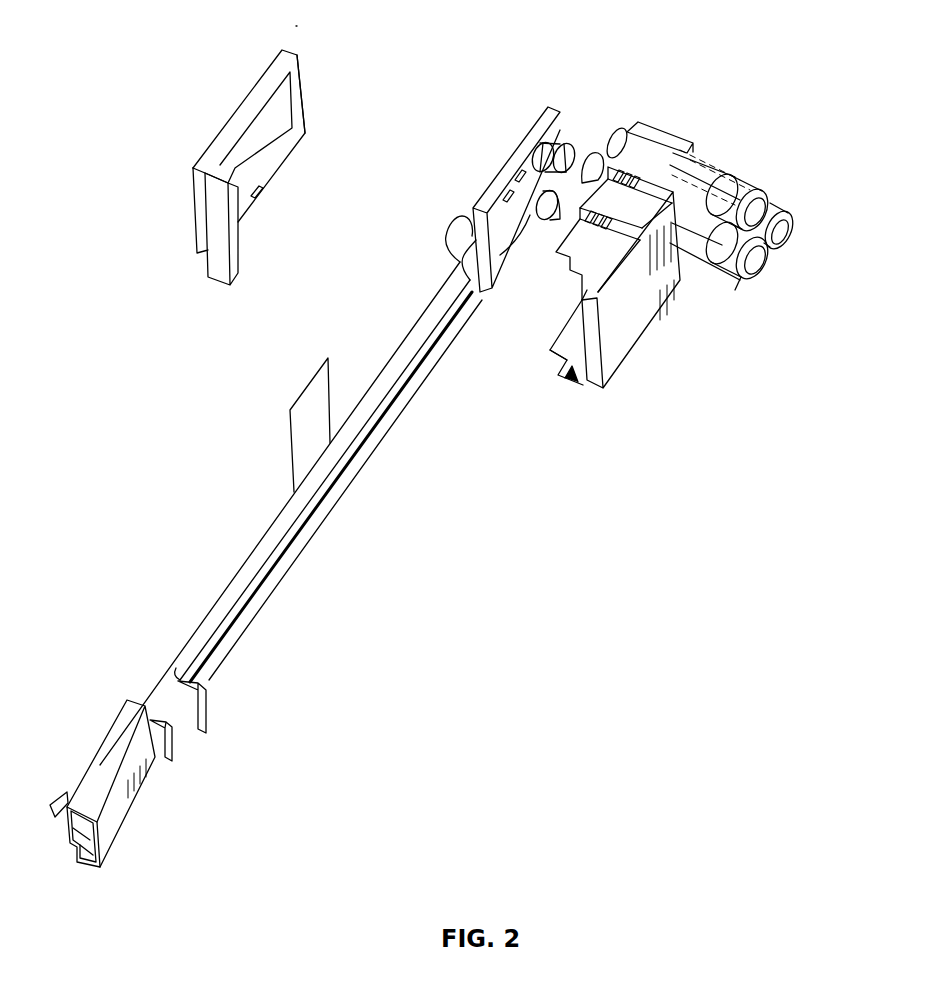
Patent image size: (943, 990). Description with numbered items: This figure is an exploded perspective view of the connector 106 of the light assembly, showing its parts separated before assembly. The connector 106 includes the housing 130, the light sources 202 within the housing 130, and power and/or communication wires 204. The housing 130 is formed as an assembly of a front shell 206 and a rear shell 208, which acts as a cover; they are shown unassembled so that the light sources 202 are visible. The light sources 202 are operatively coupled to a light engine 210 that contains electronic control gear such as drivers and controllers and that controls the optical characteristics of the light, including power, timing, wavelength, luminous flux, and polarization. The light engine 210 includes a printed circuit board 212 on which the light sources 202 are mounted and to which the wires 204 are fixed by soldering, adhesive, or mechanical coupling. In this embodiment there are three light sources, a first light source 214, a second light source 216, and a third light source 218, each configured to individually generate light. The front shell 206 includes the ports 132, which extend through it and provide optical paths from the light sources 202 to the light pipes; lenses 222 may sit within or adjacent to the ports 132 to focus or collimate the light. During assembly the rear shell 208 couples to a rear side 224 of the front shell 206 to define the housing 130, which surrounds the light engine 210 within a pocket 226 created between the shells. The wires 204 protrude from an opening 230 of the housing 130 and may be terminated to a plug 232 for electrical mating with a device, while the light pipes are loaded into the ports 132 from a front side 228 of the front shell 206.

The connector 106 is at (298, 24).
The housing 130 is at (305, 96).
The ports 132 is at (772, 188).
The light sources 202 is at (540, 160).
The power and/or communication wires 204 is at (372, 458).
The front shell 206 is at (632, 320).
The rear shell 208 is at (223, 135).
The light engine 210 is at (500, 154).
The printed circuit board 212 is at (463, 232).
The first light source 214 is at (530, 260).
The second light source 216 is at (568, 150).
The third light source 218 is at (542, 145).
The lenses 222 is at (620, 130).
The rear side 224 is at (547, 340).
The pocket 226 is at (574, 304).
The front side 228 is at (745, 290).
The opening 230 is at (575, 384).
The plug 232 is at (118, 830).